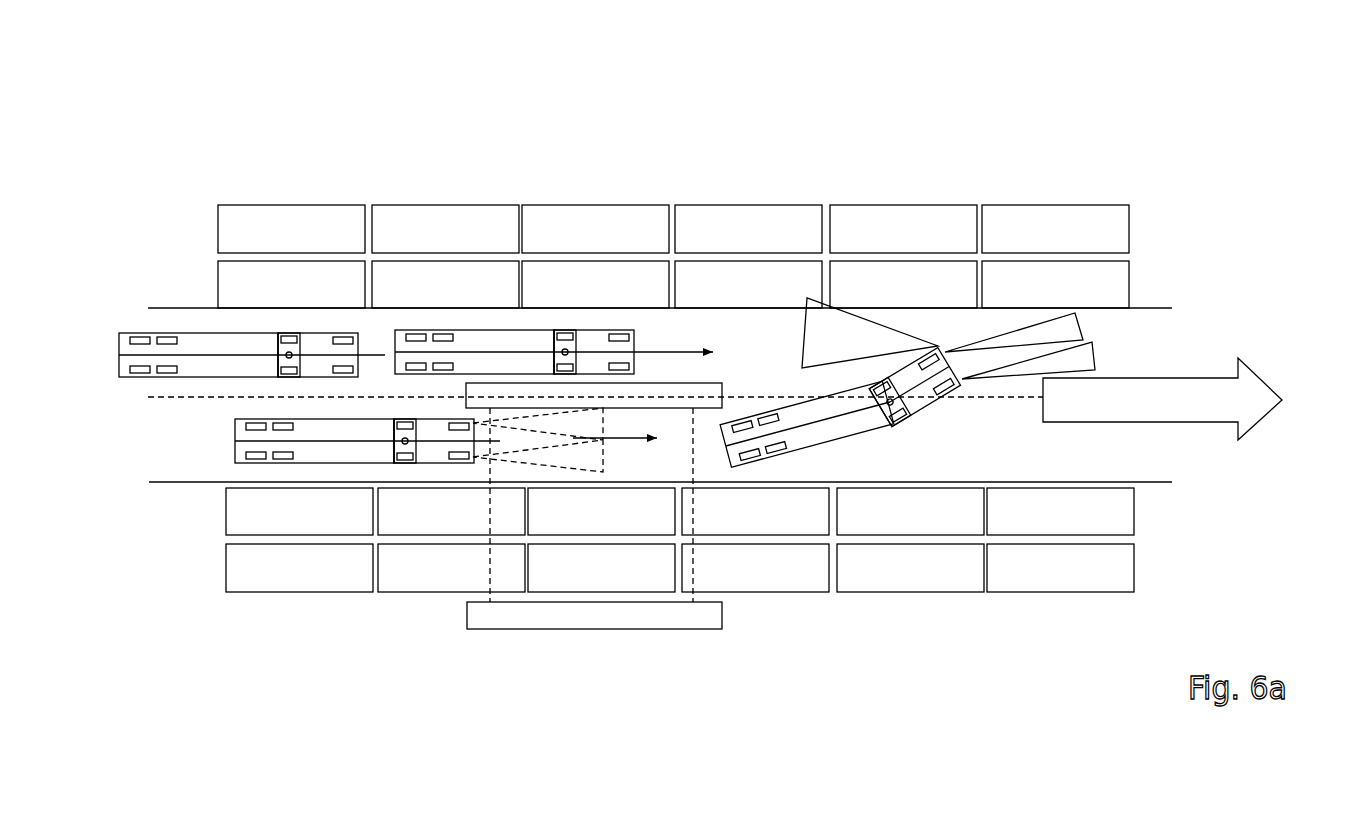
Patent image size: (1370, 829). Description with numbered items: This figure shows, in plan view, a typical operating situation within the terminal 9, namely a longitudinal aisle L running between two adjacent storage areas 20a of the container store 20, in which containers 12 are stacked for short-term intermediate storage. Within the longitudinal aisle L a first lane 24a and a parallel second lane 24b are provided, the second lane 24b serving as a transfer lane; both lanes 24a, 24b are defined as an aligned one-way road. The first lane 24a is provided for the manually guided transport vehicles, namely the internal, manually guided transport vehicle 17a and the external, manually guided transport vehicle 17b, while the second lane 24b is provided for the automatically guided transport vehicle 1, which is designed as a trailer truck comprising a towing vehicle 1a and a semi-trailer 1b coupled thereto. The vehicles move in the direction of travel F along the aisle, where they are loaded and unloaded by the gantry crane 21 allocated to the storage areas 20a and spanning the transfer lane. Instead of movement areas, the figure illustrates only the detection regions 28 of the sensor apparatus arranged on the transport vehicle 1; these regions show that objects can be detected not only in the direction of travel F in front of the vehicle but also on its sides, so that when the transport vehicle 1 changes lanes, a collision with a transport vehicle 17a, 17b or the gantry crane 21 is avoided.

The transport vehicle 1 is at (865, 427).
The towing vehicle 1a is at (430, 450).
The semi-trailer 1b is at (332, 435).
The terminal 9 is at (726, 398).
The container 12 is at (762, 398).
The internal, manually guided transport vehicle 17a is at (512, 359).
The external, manually guided transport vehicle 17b is at (217, 357).
The container store 20 is at (762, 398).
The storage area 20a is at (1087, 280).
The gantry crane 21 is at (580, 622).
The first lane 24a is at (1275, 308).
The second lane 24b is at (1299, 400).
The detection region 28 is at (567, 427).
The longitudinal aisle L is at (738, 342).
The direction of travel F is at (554, 381).